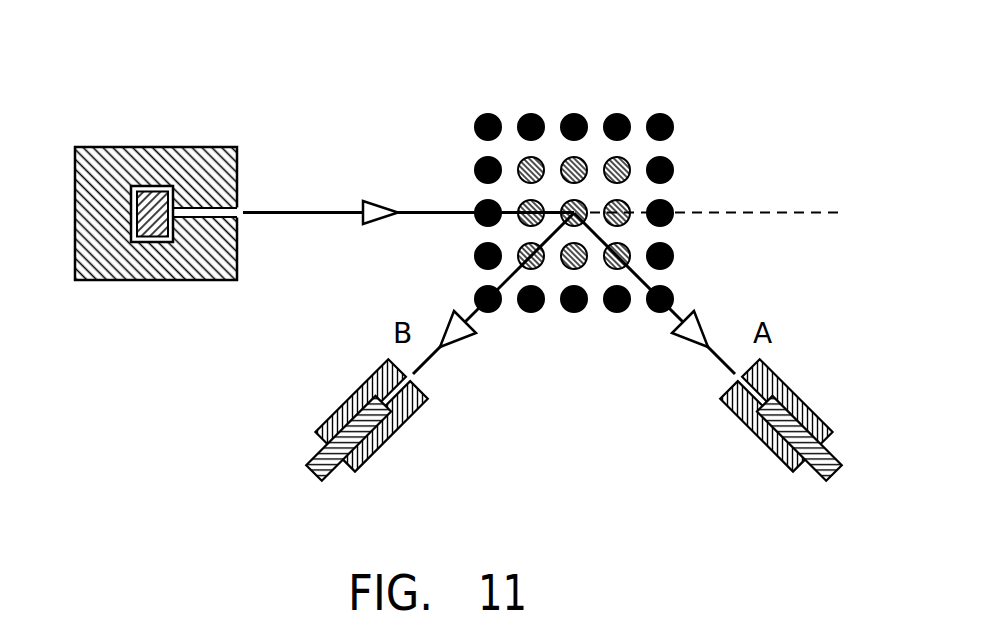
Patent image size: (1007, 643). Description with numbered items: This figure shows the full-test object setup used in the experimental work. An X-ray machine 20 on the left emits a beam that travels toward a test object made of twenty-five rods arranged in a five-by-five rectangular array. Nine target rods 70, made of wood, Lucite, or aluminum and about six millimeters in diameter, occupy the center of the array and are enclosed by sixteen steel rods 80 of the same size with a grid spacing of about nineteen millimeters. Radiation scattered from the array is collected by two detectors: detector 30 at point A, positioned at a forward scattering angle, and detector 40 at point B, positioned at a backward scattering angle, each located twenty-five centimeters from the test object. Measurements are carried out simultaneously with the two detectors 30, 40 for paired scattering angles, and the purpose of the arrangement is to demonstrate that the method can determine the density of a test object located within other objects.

The X-ray machine 20 is at (180, 90).
The steel rods 80 is at (537, 113).
The target rods 70 is at (586, 203).
The detector 40 is at (360, 392).
The detector 30 is at (812, 407).